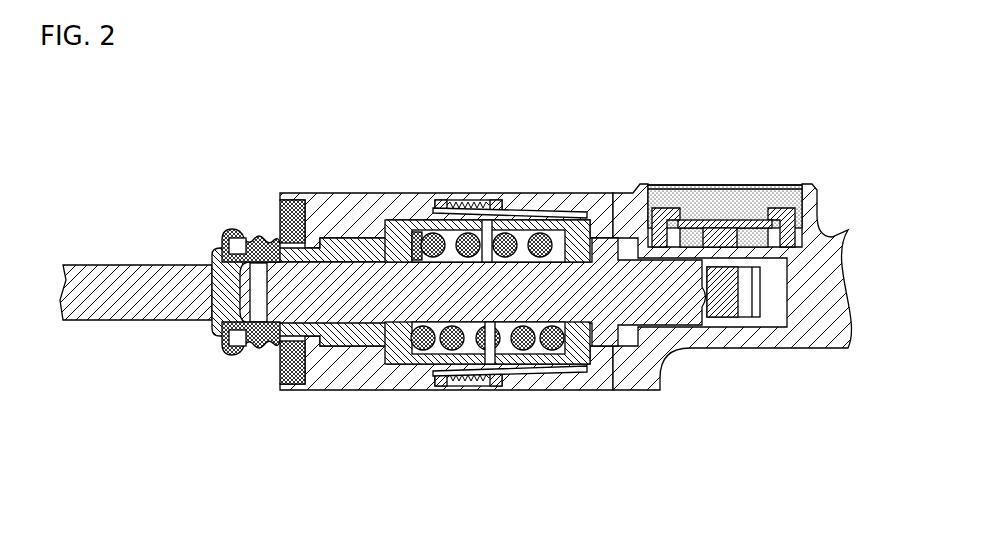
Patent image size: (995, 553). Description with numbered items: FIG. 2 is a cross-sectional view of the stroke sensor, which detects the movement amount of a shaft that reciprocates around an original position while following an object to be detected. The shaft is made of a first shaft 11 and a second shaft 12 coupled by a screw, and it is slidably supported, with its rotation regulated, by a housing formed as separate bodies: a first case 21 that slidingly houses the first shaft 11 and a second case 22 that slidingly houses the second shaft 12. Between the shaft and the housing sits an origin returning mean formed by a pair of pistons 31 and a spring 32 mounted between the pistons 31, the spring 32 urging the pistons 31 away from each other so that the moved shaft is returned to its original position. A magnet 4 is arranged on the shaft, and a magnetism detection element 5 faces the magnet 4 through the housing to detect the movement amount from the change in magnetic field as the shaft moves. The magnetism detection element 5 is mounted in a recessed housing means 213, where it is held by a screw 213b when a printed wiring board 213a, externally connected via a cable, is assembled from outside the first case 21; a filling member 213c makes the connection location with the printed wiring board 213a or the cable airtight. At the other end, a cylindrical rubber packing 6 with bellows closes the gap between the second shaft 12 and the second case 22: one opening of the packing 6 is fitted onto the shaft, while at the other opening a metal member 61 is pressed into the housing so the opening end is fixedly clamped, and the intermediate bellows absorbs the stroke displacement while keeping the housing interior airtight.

The second shaft 12 is at (160, 282).
The first shaft 11 is at (602, 307).
The packing 6 is at (253, 242).
The metal member 61 is at (285, 213).
The second case 22 is at (368, 375).
The first case 21 is at (678, 378).
The piston 31 is at (527, 245).
The spring 32 is at (548, 377).
The magnet 4 is at (750, 327).
The magnetism detection element 5 is at (665, 185).
The housing means 213 is at (680, 153).
The printed wiring board 213a is at (727, 223).
The screw 213b is at (760, 220).
The filling member 213c is at (795, 180).